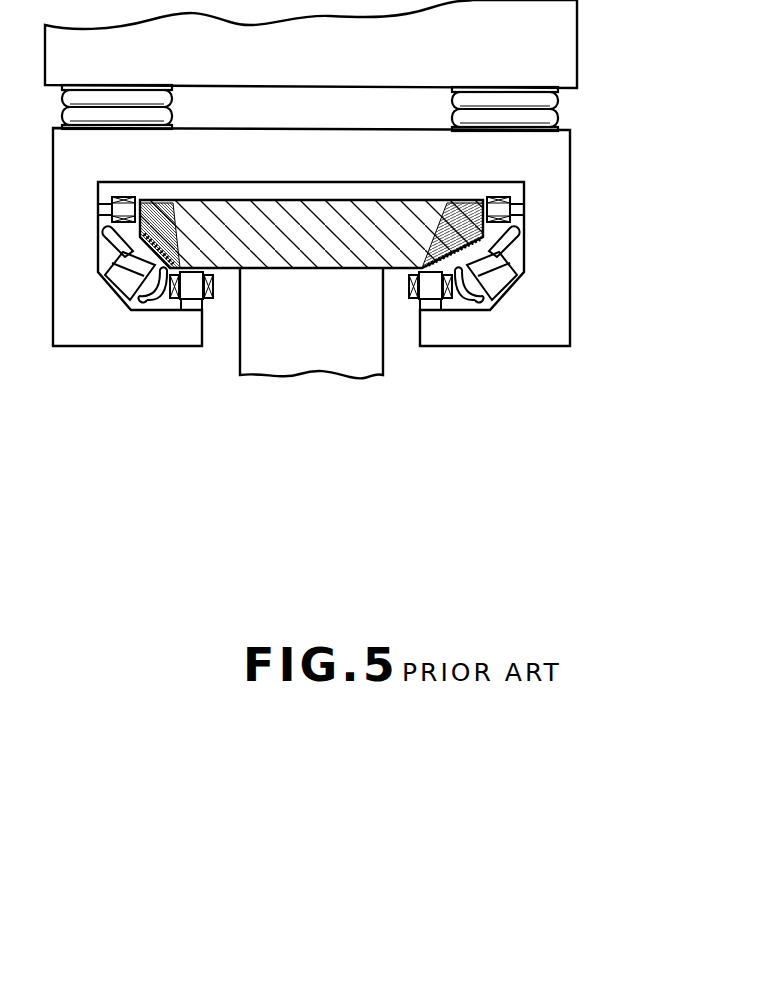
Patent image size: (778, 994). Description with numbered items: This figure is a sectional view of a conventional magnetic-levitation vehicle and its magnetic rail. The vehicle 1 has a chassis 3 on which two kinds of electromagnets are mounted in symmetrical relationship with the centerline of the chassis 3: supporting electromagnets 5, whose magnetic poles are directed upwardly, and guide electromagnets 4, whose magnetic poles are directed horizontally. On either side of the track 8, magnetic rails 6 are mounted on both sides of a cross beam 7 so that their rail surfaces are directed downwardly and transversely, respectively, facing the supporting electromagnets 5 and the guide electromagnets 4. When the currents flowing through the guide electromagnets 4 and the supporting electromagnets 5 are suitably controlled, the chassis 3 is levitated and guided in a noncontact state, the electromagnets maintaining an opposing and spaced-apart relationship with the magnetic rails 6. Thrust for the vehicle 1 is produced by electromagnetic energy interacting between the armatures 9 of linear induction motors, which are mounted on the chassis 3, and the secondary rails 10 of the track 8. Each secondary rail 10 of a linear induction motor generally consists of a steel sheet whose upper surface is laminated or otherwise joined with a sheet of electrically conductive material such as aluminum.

The vehicle 1 is at (586, 35).
The chassis 3 is at (562, 161).
The guide electromagnets 4 is at (517, 213).
The supporting electromagnets 5 is at (430, 301).
The magnetic rails 6 is at (445, 247).
The cross beam 7 is at (325, 255).
The track 8 is at (288, 363).
The armatures 9 is at (500, 288).
The secondary rails 10 is at (453, 243).